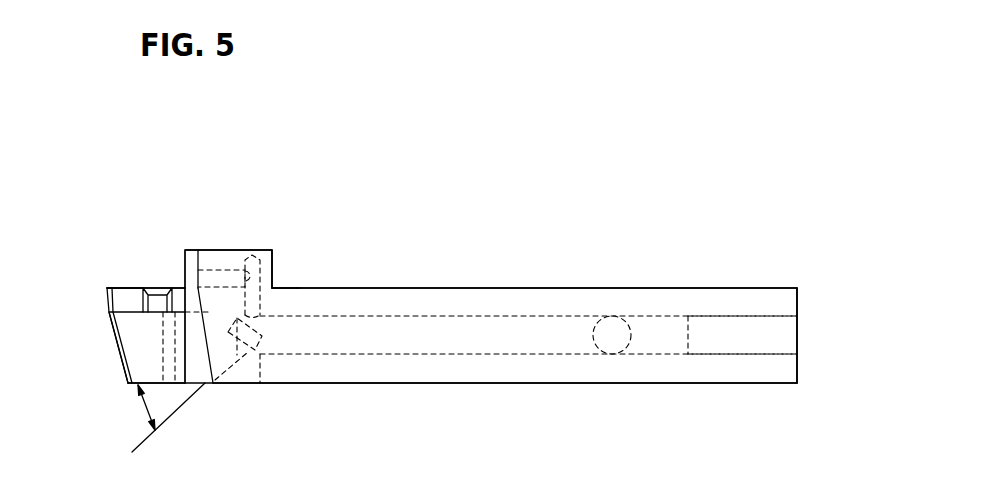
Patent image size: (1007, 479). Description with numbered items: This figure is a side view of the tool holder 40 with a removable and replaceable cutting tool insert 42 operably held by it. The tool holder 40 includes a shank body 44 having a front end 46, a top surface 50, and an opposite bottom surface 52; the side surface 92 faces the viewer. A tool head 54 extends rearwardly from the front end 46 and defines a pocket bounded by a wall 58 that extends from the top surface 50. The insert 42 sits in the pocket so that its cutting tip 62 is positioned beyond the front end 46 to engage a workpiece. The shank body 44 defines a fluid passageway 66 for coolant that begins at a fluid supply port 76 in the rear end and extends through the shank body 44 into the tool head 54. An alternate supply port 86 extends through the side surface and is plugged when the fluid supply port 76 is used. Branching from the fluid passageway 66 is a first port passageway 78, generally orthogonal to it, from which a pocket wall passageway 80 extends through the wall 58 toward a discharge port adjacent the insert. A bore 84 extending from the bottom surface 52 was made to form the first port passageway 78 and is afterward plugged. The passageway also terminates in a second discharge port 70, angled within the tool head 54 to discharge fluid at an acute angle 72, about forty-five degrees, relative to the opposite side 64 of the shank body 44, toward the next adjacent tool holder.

The tool holder 40 is at (516, 222).
The cutting tool insert 42 is at (123, 290).
The shank body 44 is at (412, 377).
The front end 46 is at (115, 325).
The top surface 50 is at (405, 287).
The bottom surface 52 is at (460, 385).
The tool head 54 is at (156, 256).
The wall 58 is at (205, 252).
The cutting tip 62 is at (107, 290).
The opposite side 64 is at (137, 383).
The fluid passageway 66 is at (463, 315).
The second discharge port 70 is at (207, 383).
The acute angle 72 is at (145, 407).
The fluid supply port 76 is at (785, 355).
The first port passageway 78 is at (258, 307).
The pocket wall passageway 80 is at (218, 270).
The bore 84 is at (255, 377).
The supply port 86 is at (610, 319).
The side surface 92 is at (720, 348).